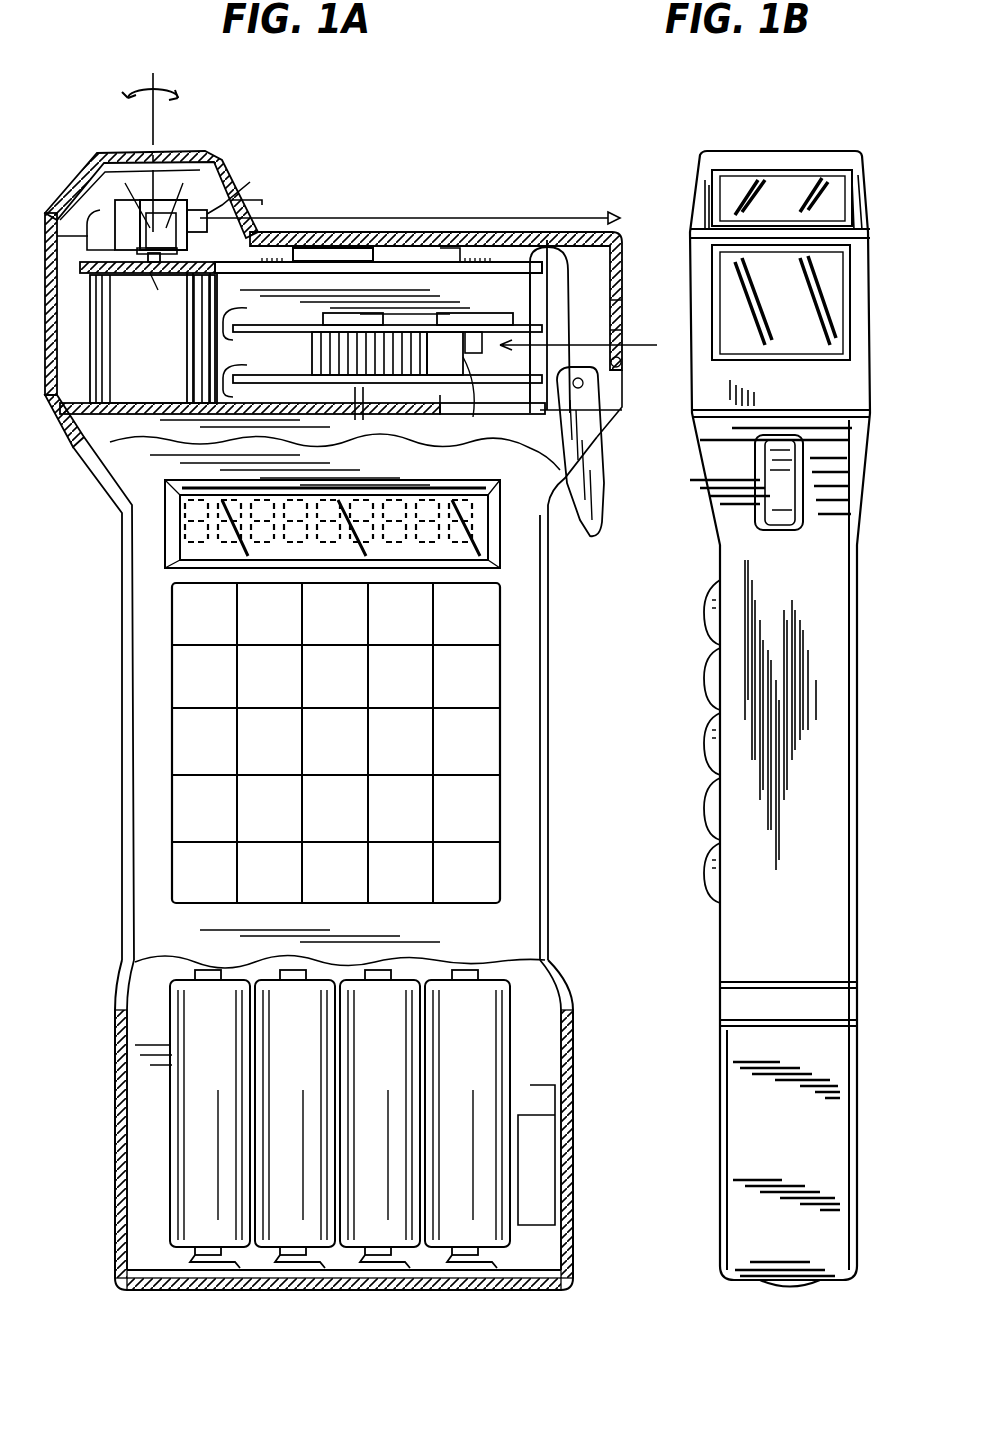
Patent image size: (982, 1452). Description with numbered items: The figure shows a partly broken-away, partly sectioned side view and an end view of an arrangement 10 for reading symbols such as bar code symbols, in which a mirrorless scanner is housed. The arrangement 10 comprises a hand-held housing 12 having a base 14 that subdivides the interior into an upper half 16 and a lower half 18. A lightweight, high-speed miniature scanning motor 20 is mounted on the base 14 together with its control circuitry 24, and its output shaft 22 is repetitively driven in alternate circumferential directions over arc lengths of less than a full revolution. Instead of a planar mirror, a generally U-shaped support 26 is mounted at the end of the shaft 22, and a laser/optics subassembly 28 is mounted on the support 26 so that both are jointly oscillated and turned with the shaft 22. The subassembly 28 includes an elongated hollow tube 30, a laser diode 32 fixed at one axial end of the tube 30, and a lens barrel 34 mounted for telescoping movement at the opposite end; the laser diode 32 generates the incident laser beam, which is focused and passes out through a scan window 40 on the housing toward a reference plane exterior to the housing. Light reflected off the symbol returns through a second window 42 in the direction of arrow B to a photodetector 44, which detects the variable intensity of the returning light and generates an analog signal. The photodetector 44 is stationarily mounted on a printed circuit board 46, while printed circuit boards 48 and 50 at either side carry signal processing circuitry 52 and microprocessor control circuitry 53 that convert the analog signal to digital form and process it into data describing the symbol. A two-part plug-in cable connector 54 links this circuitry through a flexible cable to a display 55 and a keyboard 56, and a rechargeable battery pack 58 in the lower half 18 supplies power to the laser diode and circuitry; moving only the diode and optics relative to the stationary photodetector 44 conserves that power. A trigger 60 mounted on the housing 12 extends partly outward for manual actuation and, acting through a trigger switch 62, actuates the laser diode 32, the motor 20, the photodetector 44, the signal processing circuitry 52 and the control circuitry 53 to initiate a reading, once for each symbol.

In FIG. 1A, the arrangement 10 is at (486, 182).
In FIG. 1B, the arrangement 10 is at (678, 194).
In FIG. 1B, the hand-held housing 12 is at (692, 254).
In FIG. 1A, the base 14 is at (80, 447).
In FIG. 1A, the upper half 16 is at (68, 212).
In FIG. 1A, the lower half 18 is at (118, 1015).
In FIG. 1A, the scanning motor 20 is at (107, 340).
In FIG. 1A, the output shaft 22 is at (150, 276).
In FIG. 1A, the control circuitry 24 is at (357, 248).
In FIG. 1A, the U-shaped support 26 is at (186, 249).
In FIG. 1A, the laser/optics subassembly 28 is at (170, 190).
In FIG. 1A, the elongated hollow tube 30 is at (142, 205).
In FIG. 1A, the laser diode 32 is at (112, 205).
In FIG. 1A, the lens barrel 34 is at (218, 205).
In FIG. 1A, the scan window 40 is at (235, 213).
In FIG. 1B, the scan window 40 is at (782, 210).
In FIG. 1A, the second window 42 is at (625, 312).
In FIG. 1B, the second window 42 is at (784, 305).
In FIG. 1A, the photodetector 44 is at (482, 412).
In FIG. 1A, the printed circuit board 46 is at (270, 326).
In FIG. 1A, the printed circuit board 48 is at (452, 262).
In FIG. 1A, the printed circuit board 50 is at (296, 376).
In FIG. 1A, the signal processing circuitry 52 is at (350, 316).
In FIG. 1A, the microprocessor control circuitry 53 is at (500, 302).
In FIG. 1A, the plug-in cable connector 54 is at (454, 374).
In FIG. 1A, the display 55 is at (180, 537).
In FIG. 1A, the keyboard 56 is at (493, 742).
In FIG. 1B, the keyboard 56 is at (706, 678).
In FIG. 1A, the rechargeable battery pack 58 is at (483, 1008).
In FIG. 1A, the trigger 60 is at (594, 524).
In FIG. 1B, the trigger 60 is at (800, 478).
In FIG. 1A, the trigger switch 62 is at (418, 402).
In FIG. 1A, the arrow B is at (578, 356).